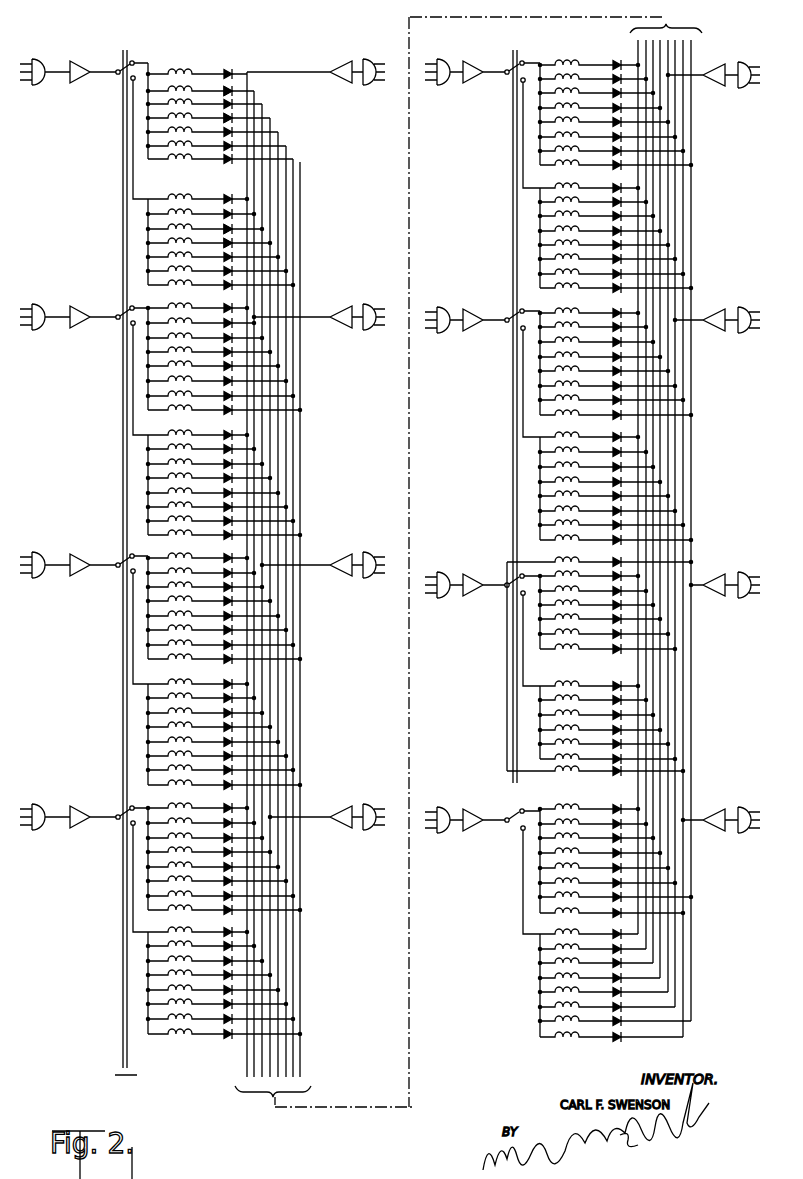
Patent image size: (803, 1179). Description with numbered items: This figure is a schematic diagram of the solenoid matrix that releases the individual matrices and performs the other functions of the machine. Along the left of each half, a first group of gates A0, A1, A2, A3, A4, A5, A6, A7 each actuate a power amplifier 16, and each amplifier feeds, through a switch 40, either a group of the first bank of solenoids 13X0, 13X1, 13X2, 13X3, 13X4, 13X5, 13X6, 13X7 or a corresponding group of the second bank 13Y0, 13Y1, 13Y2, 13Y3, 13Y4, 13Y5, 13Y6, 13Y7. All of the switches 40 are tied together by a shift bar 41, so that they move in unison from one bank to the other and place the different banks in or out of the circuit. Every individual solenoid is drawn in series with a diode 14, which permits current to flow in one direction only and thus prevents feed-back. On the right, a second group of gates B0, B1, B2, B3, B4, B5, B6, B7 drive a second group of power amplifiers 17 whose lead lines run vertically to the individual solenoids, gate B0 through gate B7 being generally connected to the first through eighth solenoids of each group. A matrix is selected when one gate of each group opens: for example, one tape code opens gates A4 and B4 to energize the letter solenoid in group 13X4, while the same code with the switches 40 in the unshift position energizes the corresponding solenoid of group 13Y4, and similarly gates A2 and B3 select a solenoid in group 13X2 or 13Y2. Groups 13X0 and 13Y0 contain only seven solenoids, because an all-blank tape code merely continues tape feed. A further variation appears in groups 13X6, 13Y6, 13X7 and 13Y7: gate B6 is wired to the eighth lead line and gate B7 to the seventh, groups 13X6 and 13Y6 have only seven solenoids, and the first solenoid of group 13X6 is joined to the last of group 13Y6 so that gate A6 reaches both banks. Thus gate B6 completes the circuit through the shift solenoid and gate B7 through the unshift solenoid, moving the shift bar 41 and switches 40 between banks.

The diode 14 is at (234, 118).
The power amplifier 16 is at (80, 62).
The power amplifier 17 is at (333, 62).
The switch 40 is at (127, 60).
The shift bar 41 is at (121, 160).
The first bank solenoid group 13X0 is at (144, 97).
The second bank solenoid group 13Y0 is at (146, 221).
The first bank solenoid group 13X1 is at (145, 367).
The second bank solenoid group 13Y1 is at (184, 432).
The first bank solenoid group 13X2 is at (145, 628).
The second bank solenoid group 13Y2 is at (146, 739).
The first bank solenoid group 13X3 is at (146, 863).
The second bank solenoid group 13Y3 is at (146, 977).
The first bank solenoid group 13X4 is at (536, 109).
The second bank solenoid group 13Y4 is at (537, 241).
The first bank solenoid group 13X5 is at (536, 360).
The second bank solenoid group 13Y5 is at (536, 470).
The first bank solenoid group 13X6 is at (536, 615).
The second bank solenoid group 13Y6 is at (536, 718).
The first bank solenoid group 13X7 is at (536, 876).
The second bank solenoid group 13Y7 is at (538, 978).
The gate A0 is at (40, 61).
The gate A1 is at (40, 307).
The gate A2 is at (40, 555).
The gate A3 is at (40, 807).
The gate A4 is at (439, 61).
The gate A5 is at (439, 309).
The gate A6 is at (439, 577).
The gate A7 is at (439, 810).
The gate B0 is at (377, 62).
The gate B1 is at (378, 308).
The gate B2 is at (378, 556).
The gate B3 is at (378, 808).
The gate B4 is at (753, 63).
The gate B5 is at (753, 310).
The gate B6 is at (753, 577).
The gate B7 is at (753, 811).